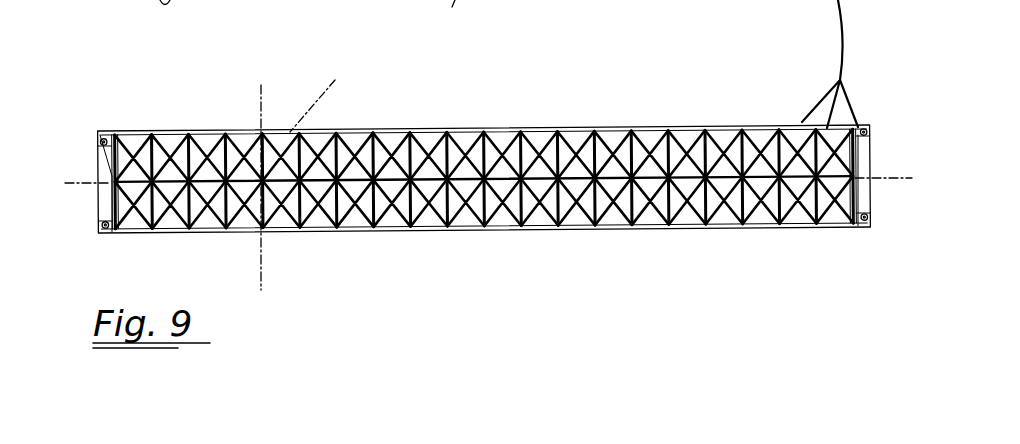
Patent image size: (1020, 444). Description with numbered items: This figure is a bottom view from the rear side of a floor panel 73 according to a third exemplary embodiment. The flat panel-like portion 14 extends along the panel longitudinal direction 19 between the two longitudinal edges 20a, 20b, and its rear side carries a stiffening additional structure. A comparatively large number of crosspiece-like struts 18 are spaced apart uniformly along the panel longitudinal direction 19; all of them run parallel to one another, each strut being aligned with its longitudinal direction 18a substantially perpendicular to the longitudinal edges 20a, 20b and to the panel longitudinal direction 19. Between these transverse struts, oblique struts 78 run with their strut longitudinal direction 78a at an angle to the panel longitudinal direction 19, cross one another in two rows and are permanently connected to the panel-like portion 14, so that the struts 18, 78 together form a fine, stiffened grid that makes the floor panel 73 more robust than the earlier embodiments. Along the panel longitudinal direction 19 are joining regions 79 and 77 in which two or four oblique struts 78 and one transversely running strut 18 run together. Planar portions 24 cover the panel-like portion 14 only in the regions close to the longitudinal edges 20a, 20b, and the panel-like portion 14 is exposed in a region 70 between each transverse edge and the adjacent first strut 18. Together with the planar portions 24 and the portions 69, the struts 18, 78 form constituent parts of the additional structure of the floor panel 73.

The panel-like portion 14 is at (385, 232).
The struts 18 is at (163, 128).
The longitudinal direction of the strut 18a is at (262, 102).
The panel longitudinal direction 19 is at (893, 176).
The longitudinal edge 20a is at (672, 127).
The longitudinal edge 20b is at (525, 233).
The planar portions 24 is at (588, 128).
The portions 69 is at (103, 128).
The region 70 is at (866, 198).
The floor panel 73 is at (712, 82).
The joining region 77 is at (448, 178).
The oblique struts 78 is at (138, 128).
The strut longitudinal direction 78a is at (246, 130).
The joining region 79 is at (108, 172).